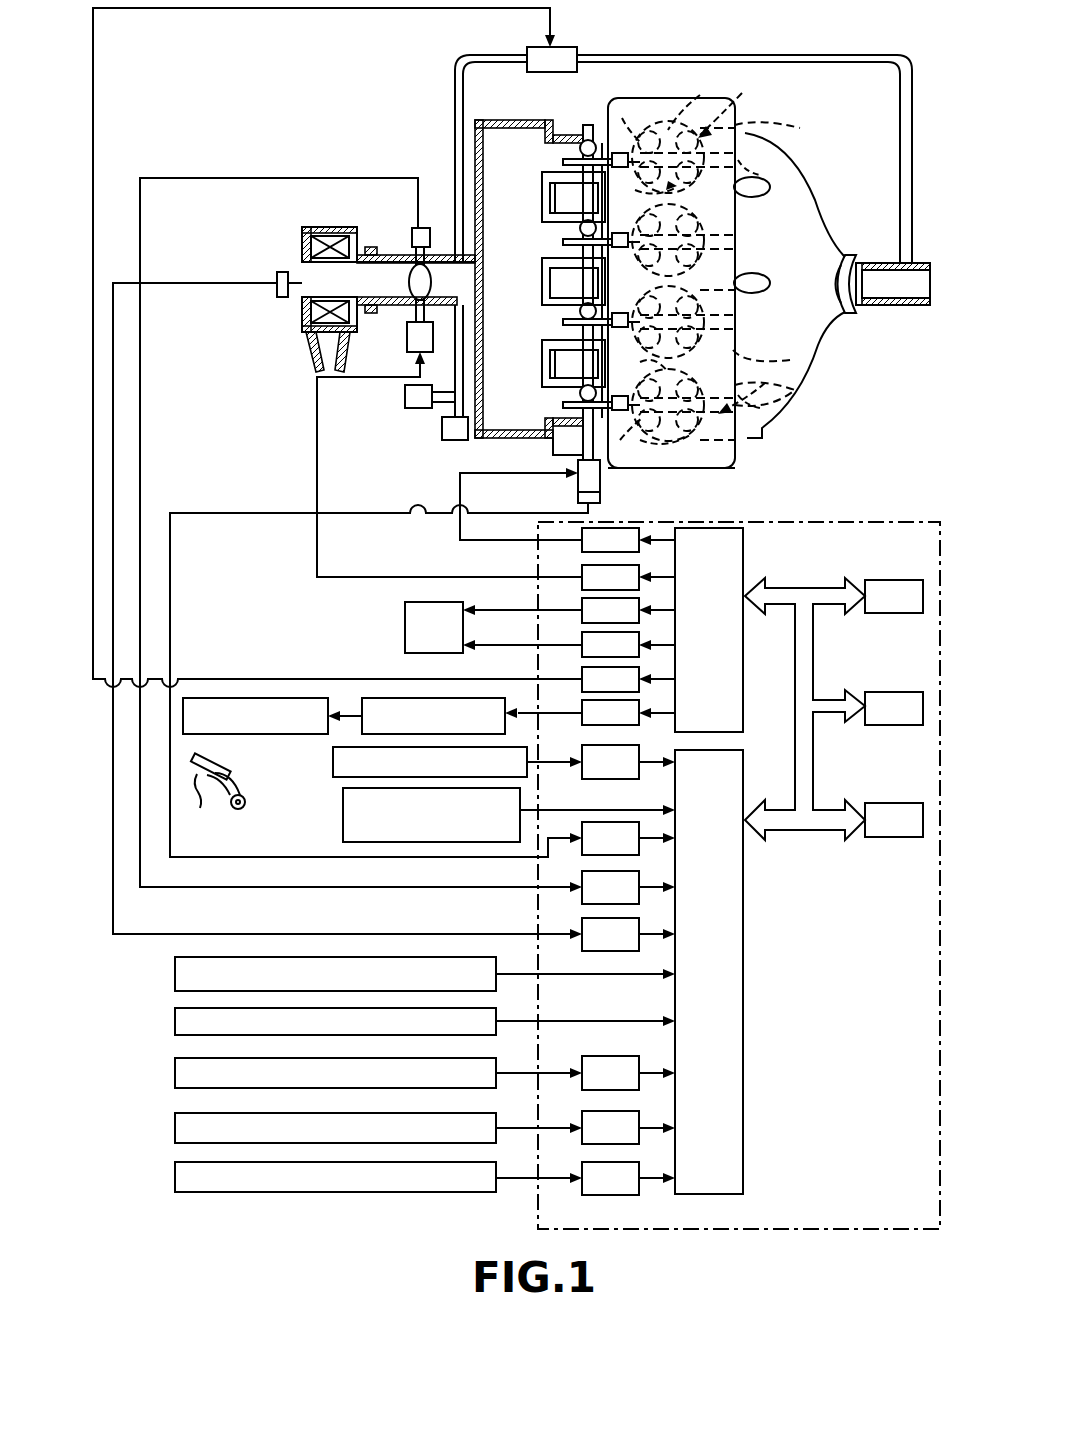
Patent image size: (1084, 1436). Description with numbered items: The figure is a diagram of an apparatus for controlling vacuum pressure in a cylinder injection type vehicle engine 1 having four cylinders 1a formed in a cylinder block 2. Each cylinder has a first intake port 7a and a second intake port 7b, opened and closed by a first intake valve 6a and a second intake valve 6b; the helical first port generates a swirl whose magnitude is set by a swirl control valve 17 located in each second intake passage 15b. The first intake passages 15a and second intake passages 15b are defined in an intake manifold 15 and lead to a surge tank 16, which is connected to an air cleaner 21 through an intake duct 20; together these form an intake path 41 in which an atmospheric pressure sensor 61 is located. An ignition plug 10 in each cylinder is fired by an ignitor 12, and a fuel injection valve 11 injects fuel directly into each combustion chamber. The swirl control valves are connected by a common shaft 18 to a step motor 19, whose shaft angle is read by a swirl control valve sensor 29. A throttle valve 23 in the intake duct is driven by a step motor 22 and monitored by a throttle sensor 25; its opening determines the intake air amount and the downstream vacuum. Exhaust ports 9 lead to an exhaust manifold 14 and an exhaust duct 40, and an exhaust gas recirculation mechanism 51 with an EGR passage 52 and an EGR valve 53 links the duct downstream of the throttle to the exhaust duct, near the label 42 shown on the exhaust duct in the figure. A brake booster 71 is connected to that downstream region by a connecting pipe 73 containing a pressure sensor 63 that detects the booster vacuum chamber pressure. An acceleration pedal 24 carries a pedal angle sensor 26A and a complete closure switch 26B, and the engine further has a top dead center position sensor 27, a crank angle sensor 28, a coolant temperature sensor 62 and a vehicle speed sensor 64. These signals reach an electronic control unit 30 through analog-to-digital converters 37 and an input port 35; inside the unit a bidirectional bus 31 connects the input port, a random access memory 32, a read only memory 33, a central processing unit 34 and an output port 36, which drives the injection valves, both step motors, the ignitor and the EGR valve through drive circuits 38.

The engine 1 is at (748, 95).
The cylinder 1a is at (783, 126).
The cylinder block 2 is at (732, 465).
The first intake valve 6a is at (662, 325).
The second intake valve 6b is at (752, 241).
The first intake port 7a is at (672, 478).
The second intake port 7b is at (657, 221).
The exhaust port 9 is at (752, 170).
The ignition plug 10 is at (285, 698).
The fuel injection valve 11 is at (405, 626).
The ignitor 12 is at (380, 698).
The exhaust manifold 14 is at (812, 328).
The intake manifold 15 is at (550, 143).
The first intake passage 15a is at (570, 186).
The second intake passage 15b is at (580, 152).
The surge tank 16 is at (483, 150).
The swirl control valve 17 is at (585, 125).
The common shaft 18 is at (572, 282).
The step motor 19 is at (578, 478).
The intake duct 20 is at (385, 255).
The air cleaner 21 is at (302, 338).
The step motor 22 is at (407, 344).
The throttle valve 23 is at (431, 284).
The acceleration pedal 24 is at (217, 796).
The throttle sensor 25 is at (408, 228).
The pedal angle sensor 26A is at (333, 763).
The complete closure switch 26B is at (343, 820).
The top dead center position sensor 27 is at (175, 970).
The crank angle sensor 28 is at (175, 1022).
The swirl control valve sensor 29 is at (600, 500).
The electronic control unit 30 is at (852, 518).
The bidirectional bus 31 is at (818, 600).
The random access memory 32 is at (892, 579).
The read only memory 33 is at (893, 692).
The central processing unit 34 is at (892, 802).
The input port 35 is at (743, 1052).
The output port 36 is at (743, 550).
The analog-to-digital converter 37 is at (582, 752).
The drive circuit 38 is at (582, 572).
The exhaust duct 40 is at (895, 305).
The intake path 41 is at (472, 268).
The intake opening 42 is at (935, 263).
The exhaust gas recirculation mechanism 51 is at (690, 40).
The EGR passage 52 is at (852, 55).
The EGR valve 53 is at (560, 47).
The atmospheric pressure sensor 61 is at (277, 275).
The coolant temperature sensor 62 is at (175, 1072).
The pressure sensor 63 is at (175, 1128).
The vehicle speed sensor 64 is at (175, 1177).
The brake booster 71 is at (442, 430).
The connecting pipe 73 is at (463, 348).